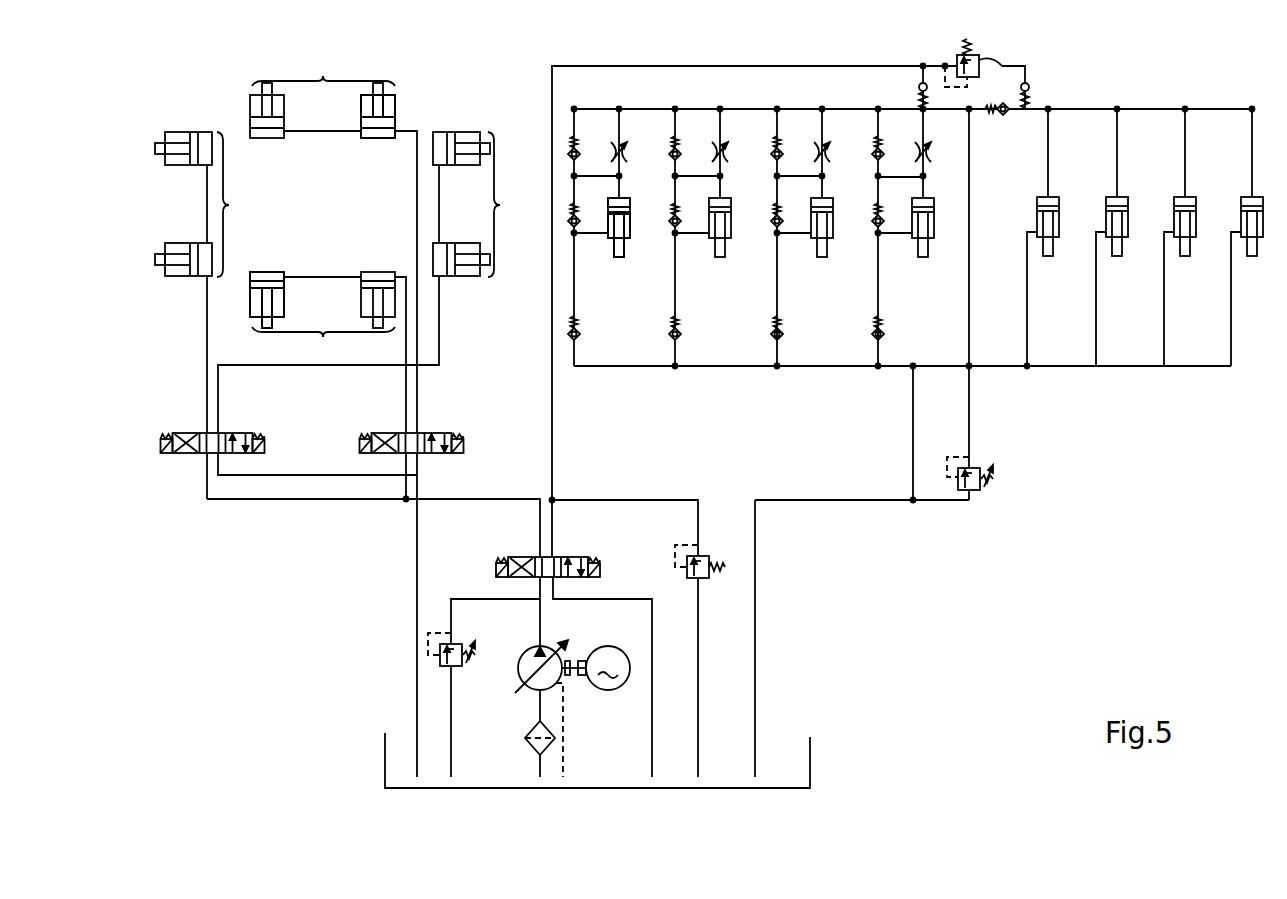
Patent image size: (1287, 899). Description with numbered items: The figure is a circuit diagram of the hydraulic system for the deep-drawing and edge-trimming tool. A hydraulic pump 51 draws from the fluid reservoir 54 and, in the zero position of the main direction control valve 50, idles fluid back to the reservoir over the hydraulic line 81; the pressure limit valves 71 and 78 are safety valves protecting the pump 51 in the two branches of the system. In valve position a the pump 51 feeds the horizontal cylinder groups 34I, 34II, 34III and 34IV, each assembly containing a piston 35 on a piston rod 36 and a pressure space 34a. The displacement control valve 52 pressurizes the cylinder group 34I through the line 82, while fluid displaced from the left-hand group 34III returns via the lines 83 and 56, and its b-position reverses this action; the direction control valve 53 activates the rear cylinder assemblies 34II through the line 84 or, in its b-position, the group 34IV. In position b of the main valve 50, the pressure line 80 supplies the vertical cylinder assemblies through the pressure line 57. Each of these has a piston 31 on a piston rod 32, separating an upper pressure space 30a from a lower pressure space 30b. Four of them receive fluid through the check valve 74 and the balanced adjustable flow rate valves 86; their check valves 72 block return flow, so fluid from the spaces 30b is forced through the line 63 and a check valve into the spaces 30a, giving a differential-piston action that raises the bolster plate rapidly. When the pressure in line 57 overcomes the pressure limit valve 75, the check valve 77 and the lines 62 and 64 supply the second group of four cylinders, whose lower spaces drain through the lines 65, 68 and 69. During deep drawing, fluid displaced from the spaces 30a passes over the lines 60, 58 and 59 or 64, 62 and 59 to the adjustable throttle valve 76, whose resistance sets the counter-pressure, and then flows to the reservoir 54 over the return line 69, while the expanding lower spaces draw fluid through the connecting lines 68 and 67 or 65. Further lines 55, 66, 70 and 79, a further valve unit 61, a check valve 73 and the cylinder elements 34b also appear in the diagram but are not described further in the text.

The upper pressure space 30a is at (622, 199).
The lower pressure space 30b is at (607, 226).
The piston 31 is at (630, 208).
The piston rod 32 is at (625, 248).
The cylinder group 34 I 34I is at (490, 204).
The rear cylinder assemblies 34 II 34II is at (322, 87).
The left-hand cylinder assemblies 34 III 34III is at (216, 204).
The cylinder group 34 IV 34IV is at (328, 385).
The pressure space 34a is at (393, 131).
The support cylinder housing 34b is at (392, 100).
The piston 35 is at (362, 121).
The piston rod 36 is at (265, 322).
The main direction control valve 50 is at (553, 585).
The hydraulic pump 51 is at (517, 660).
The displacement control valve 52 is at (209, 458).
The direction control valve 53 is at (414, 460).
The fluid reservoir 54 is at (811, 737).
The hydraulic line 55 is at (480, 503).
The line 56 is at (346, 478).
The pressure line 57 is at (553, 440).
The hydraulic line 58 is at (699, 108).
The hydraulic line 59 is at (971, 205).
The hydraulic line 60 is at (675, 122).
The check valve and throttle unit 61 is at (822, 122).
The line 62 is at (1146, 108).
The line 63 is at (900, 177).
The hydraulic line 64 is at (1050, 156).
The connecting line 65 is at (1163, 300).
The return branch line 66 is at (877, 298).
The connecting line 67 is at (732, 368).
The connecting line 68 is at (912, 428).
The return line 69 is at (865, 502).
The return line to tank 70 is at (699, 675).
The pressure limit valve 71 is at (440, 664).
The check valve 72 is at (671, 333).
The check valve 73 is at (572, 145).
The check valve 74 is at (918, 87).
The pressure limit valve 75 is at (980, 77).
The adjustable throttle valve 76 is at (971, 492).
The check valve 77 is at (1031, 87).
The pressure limit valve 78 is at (707, 579).
The pressure line 79 is at (729, 233).
The pressure line 80 is at (542, 618).
The hydraulic line 81 is at (651, 718).
The line 82 is at (269, 366).
The line 83 is at (207, 350).
The line 84 is at (417, 203).
The adjustable flow rate valve 86 is at (927, 161).